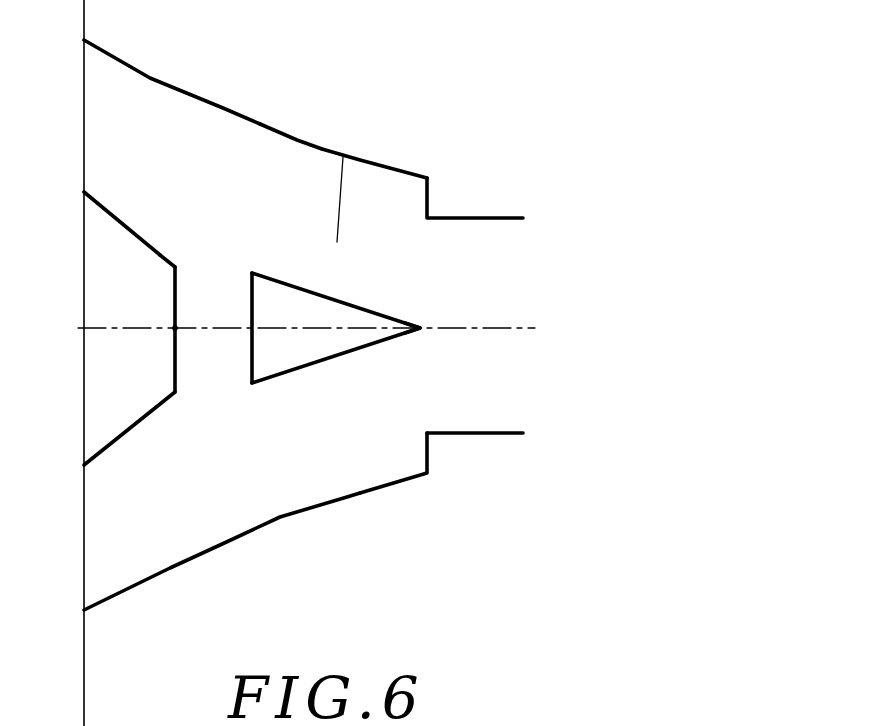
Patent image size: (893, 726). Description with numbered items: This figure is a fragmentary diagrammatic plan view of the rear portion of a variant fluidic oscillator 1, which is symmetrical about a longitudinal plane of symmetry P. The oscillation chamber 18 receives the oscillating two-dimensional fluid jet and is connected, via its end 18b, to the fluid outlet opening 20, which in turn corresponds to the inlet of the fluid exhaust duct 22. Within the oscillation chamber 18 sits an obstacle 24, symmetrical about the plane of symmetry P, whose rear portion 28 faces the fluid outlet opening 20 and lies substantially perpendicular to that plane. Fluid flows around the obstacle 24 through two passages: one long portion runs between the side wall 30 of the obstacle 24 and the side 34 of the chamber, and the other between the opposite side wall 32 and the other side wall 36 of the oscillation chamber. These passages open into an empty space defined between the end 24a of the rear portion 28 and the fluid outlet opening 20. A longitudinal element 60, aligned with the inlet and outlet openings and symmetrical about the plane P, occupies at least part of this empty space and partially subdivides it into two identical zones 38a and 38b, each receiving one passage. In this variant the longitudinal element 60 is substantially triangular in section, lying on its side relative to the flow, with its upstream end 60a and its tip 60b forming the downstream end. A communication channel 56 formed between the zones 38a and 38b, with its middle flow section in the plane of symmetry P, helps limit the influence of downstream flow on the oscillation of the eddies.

The fluidic oscillator 1 is at (303, 140).
The oscillation chamber 18 is at (223, 108).
The end of oscillation chamber 18b is at (427, 197).
The fluid outlet opening 20 is at (430, 415).
The fluid exhaust duct 22 is at (493, 433).
The obstacle 24 is at (159, 313).
The end of rear portion of obstacle 24a is at (178, 372).
The rear portion of obstacle 28 is at (165, 255).
The side wall of obstacle 30 is at (103, 203).
The side wall of obstacle 32 is at (120, 440).
The side of oscillation chamber 34 is at (297, 140).
The side wall of oscillation chamber 36 is at (298, 513).
The zone of empty space 38a is at (343, 157).
The zone of empty space 38b is at (317, 432).
The communication channel 56 is at (225, 300).
The longitudinal element 60 is at (362, 374).
The upstream end of longitudinal element 60a is at (250, 360).
The tip of longitudinal element 60b is at (422, 329).
The longitudinal plane of symmetry P is at (535, 327).